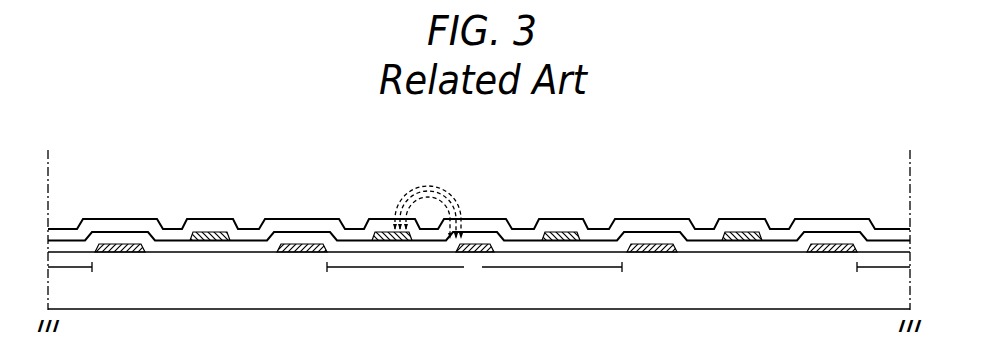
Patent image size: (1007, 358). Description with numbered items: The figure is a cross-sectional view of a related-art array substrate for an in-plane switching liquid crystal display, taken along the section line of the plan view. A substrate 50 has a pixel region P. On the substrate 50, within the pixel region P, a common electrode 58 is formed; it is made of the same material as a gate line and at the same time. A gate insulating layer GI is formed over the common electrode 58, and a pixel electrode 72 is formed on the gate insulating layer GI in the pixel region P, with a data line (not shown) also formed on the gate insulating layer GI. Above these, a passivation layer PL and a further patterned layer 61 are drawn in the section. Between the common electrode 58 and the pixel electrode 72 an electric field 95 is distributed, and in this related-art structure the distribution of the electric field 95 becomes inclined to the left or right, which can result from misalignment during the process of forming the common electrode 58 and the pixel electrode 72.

The substrate 50 is at (899, 297).
The common electrode 58 is at (108, 245).
The gate insulating layer GI is at (159, 237).
The data line 61 is at (200, 233).
The pixel electrode 72 is at (388, 232).
The passivation layer PL is at (352, 218).
The electric field 95 is at (437, 193).
The pixel region P is at (479, 268).